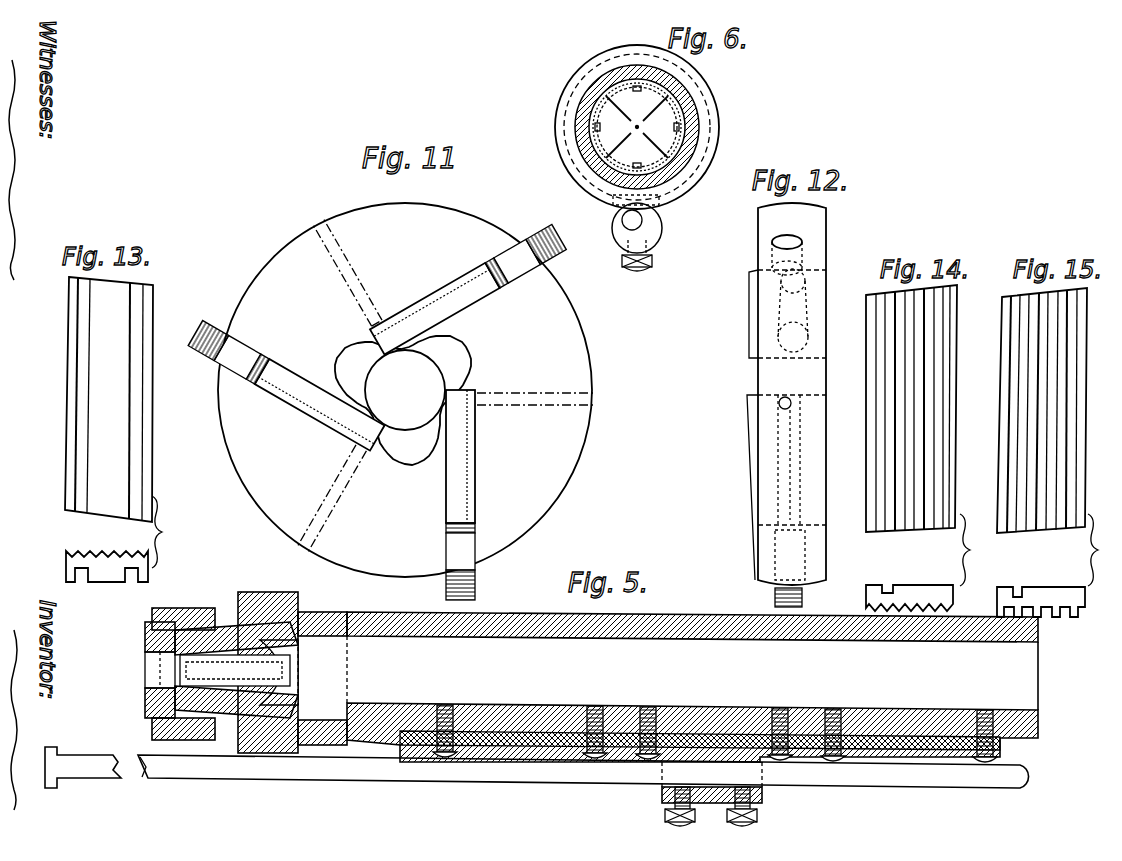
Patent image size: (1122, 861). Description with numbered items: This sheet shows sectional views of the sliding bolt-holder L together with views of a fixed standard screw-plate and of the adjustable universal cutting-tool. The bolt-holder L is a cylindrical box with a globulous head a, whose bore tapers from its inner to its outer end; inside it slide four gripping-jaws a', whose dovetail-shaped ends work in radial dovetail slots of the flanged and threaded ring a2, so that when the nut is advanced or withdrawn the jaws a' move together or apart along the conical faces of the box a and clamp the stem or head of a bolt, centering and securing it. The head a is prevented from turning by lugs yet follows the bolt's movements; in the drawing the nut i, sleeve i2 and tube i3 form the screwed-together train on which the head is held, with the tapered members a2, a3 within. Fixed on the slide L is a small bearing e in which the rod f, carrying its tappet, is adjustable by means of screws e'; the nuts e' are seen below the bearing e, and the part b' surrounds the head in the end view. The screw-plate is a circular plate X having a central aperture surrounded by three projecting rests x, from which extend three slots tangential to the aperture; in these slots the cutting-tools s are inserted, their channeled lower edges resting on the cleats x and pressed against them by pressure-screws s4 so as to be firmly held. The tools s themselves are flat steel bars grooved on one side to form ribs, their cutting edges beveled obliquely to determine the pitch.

In FIG. 11, the circular plate X is at (405, 390).
In FIG. 12, the circular plate X is at (737, 556).
In FIG. 11, the projecting rests x is at (403, 400).
In FIG. 11, the cutting-tool s is at (377, 404).
In FIG. 12, the cutting-tool s is at (786, 411).
In FIG. 13, the cutting-tool s is at (62, 413).
In FIG. 14, the cutting-tool s is at (950, 406).
In FIG. 15, the cutting-tool s is at (1010, 408).
In FIG. 5, the cutting-tool s is at (322, 643).
In FIG. 11, the pressure-screws s4 is at (370, 404).
In FIG. 12, the pressure-screws s4 is at (795, 422).
In FIG. 6, the outer ring b' is at (641, 128).
In FIG. 6, the globulous head a is at (626, 128).
In FIG. 5, the globulous head a is at (700, 715).
In FIG. 6, the gripping-jaws a' is at (637, 127).
In FIG. 6, the bearing e is at (643, 229).
In FIG. 5, the bearing e is at (720, 785).
In FIG. 6, the screws e' is at (649, 261).
In FIG. 5, the screws e' is at (710, 817).
In FIG. 6, the rod f is at (623, 220).
In FIG. 5, the rod f is at (537, 778).
In FIG. 5, the sliding bolt-holder L is at (692, 676).
In FIG. 5, the nut i is at (204, 669).
In FIG. 5, the sleeve i2 is at (292, 666).
In FIG. 5, the tube interior i3 is at (499, 669).
In FIG. 5, the flanged and threaded ring a2 is at (175, 640).
In FIG. 5, the lower collet jaw a3 is at (175, 692).